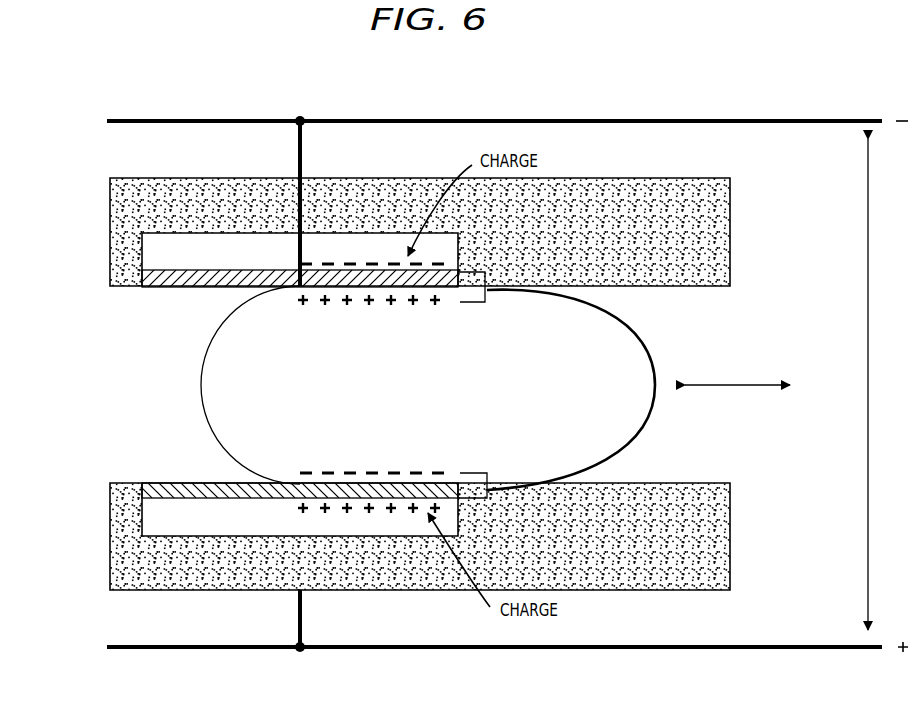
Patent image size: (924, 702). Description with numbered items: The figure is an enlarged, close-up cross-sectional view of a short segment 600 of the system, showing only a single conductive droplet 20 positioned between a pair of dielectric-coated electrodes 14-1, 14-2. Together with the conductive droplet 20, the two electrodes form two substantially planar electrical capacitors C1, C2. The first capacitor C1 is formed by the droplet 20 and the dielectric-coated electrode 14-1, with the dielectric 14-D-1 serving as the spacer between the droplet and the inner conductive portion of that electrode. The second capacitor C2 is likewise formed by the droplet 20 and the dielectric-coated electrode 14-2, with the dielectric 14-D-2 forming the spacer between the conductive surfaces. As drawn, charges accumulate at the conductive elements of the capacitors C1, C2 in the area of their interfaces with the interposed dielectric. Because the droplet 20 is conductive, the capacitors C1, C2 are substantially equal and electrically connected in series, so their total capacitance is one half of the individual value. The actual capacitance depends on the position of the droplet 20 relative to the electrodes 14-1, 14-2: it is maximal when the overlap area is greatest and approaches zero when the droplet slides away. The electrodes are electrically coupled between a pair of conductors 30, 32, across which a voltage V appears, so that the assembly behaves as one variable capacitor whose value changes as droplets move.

The short segment 600 is at (641, 77).
The conductor 30 is at (136, 118).
The conductor 32 is at (147, 651).
The dielectric 14-D-1 is at (146, 288).
The dielectric-coated electrode 14-1 is at (233, 288).
The dielectric 14-D-2 is at (152, 482).
The dielectric-coated electrode 14-2 is at (232, 483).
The conductive droplet 20 is at (205, 380).
The first capacitor C1 is at (460, 289).
The second capacitor C2 is at (470, 490).
The applied voltage V is at (867, 384).